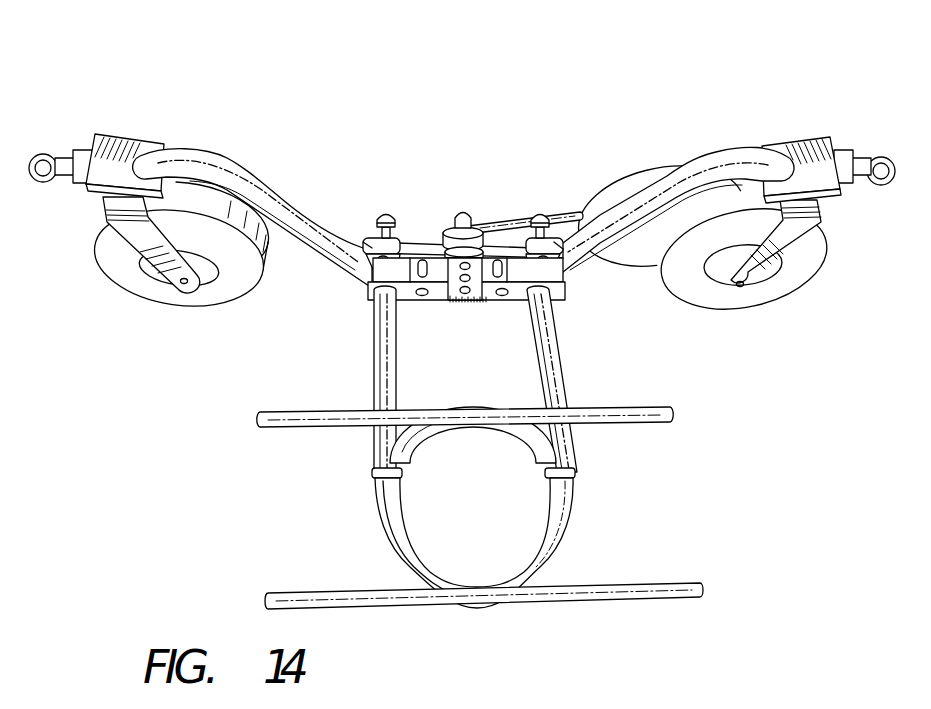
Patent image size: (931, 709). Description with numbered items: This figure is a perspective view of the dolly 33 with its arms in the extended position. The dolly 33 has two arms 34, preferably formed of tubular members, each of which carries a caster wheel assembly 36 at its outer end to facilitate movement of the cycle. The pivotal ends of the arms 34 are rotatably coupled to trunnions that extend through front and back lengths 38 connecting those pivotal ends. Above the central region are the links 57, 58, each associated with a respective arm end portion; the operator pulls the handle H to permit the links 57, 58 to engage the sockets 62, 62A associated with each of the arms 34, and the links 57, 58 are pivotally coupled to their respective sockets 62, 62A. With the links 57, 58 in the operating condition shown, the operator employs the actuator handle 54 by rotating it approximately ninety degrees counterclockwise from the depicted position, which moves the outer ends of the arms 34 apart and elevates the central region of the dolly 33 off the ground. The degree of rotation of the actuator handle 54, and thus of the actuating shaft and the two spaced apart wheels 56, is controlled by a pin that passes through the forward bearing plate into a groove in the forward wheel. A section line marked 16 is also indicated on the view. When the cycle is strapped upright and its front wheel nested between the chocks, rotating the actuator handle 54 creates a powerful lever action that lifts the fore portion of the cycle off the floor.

The dolly 33 is at (452, 168).
The arms 34 is at (195, 152).
The caster wheel assembly 36 is at (157, 322).
The lengths 38 is at (432, 300).
The actuator handle 54 is at (562, 207).
The spaced apart wheels 56 is at (464, 212).
The link 57 is at (407, 250).
The link 58 is at (521, 246).
The socket 62 is at (463, 379).
The socket 62A is at (366, 291).
The section line 16- 16 is at (385, 430).
The handle H is at (387, 238).